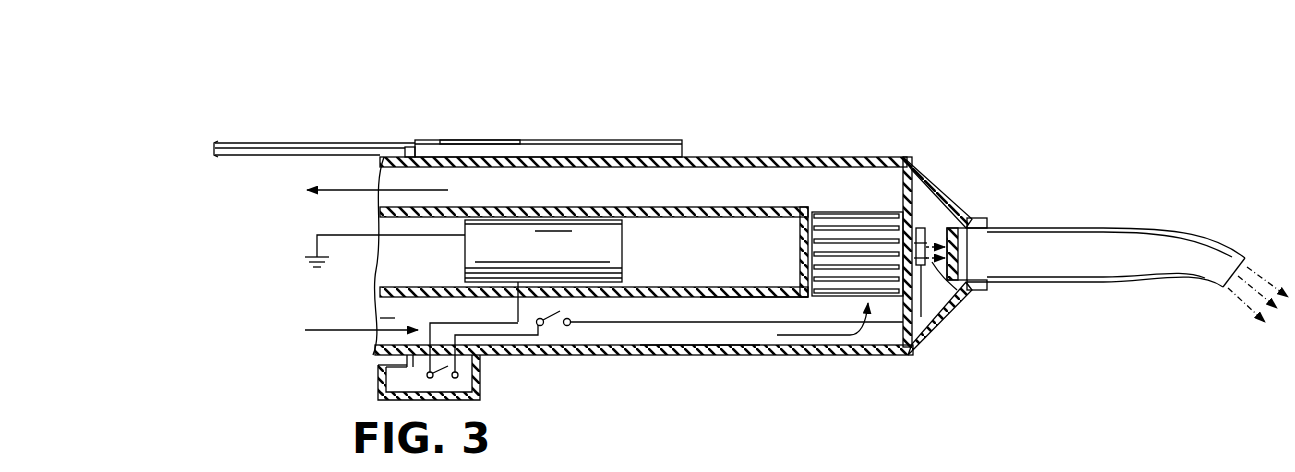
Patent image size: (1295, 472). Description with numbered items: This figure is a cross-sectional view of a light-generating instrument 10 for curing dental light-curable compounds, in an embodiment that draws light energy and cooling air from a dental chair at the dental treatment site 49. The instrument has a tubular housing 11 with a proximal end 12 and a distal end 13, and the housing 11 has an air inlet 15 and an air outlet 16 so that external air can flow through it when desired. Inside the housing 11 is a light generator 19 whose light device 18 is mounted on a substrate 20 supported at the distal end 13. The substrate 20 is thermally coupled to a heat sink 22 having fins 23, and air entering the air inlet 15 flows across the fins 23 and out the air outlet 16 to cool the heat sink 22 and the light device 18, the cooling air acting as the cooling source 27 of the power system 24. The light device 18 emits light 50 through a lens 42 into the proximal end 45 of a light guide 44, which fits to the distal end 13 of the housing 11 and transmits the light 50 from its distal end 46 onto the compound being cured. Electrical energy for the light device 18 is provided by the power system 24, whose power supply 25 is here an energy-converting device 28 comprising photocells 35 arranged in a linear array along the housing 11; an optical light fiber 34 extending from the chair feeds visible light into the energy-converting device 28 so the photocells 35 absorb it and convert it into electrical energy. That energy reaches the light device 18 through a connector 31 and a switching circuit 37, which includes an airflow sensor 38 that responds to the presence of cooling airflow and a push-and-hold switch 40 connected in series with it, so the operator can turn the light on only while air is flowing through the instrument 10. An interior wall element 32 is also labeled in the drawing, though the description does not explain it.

The light-generating instrument 10 is at (1030, 86).
The housing 11 is at (722, 155).
The proximal end 12 is at (410, 150).
The distal end 13 is at (906, 159).
The air inlet 15 is at (394, 318).
The air outlet 16 is at (376, 178).
The light device 18 is at (930, 316).
The light generator 19 is at (932, 231).
The substrate 20 is at (921, 228).
The heat sink 22 is at (820, 212).
The fins 23 is at (862, 217).
The power system 24 is at (459, 252).
The power supply 25 is at (604, 255).
The cooling source 27 is at (827, 335).
The energy-converting device 28 is at (457, 139).
The connector 31 is at (618, 325).
The inner wall 32 is at (767, 299).
The optical light fiber 34 is at (212, 151).
The photocell 35 is at (597, 140).
The switching circuit 37 is at (693, 333).
The airflow sensor 38 is at (552, 326).
The switch 40 is at (378, 383).
The lens 42 is at (962, 222).
The light guide 44 is at (1100, 226).
The proximal end of light guide 45 is at (1005, 228).
The distal end of light guide 46 is at (1223, 246).
The dental treatment site 49 is at (345, 250).
The light 50 is at (1236, 304).